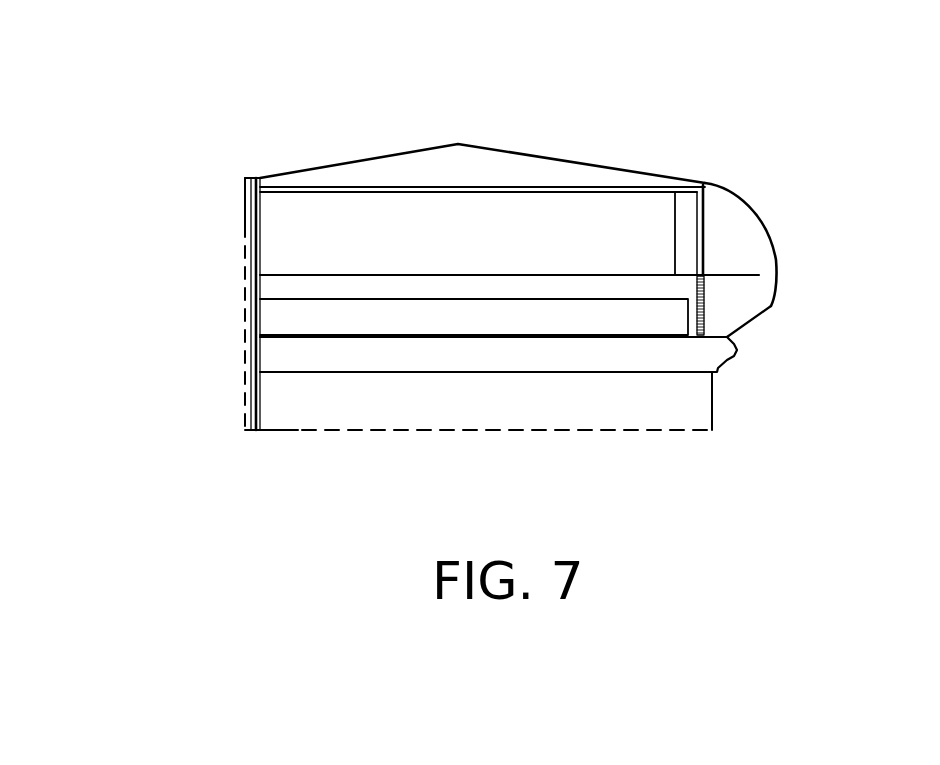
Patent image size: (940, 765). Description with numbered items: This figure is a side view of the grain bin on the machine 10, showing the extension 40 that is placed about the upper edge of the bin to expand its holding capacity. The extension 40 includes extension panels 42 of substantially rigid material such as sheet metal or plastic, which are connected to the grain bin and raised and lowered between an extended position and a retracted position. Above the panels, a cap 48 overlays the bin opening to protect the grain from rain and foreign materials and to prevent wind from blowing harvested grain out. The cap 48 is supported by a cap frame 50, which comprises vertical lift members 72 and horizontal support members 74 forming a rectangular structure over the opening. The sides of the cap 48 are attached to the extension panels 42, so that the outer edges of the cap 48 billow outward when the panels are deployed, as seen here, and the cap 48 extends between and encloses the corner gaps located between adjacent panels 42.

The machine 10 is at (704, 82).
The extension 40 is at (583, 82).
The extension panels 42 is at (705, 310).
The cap 48 is at (773, 247).
The cap frame 50 is at (270, 198).
The vertical lift members 72 is at (705, 200).
The horizontal support members 74 is at (336, 188).